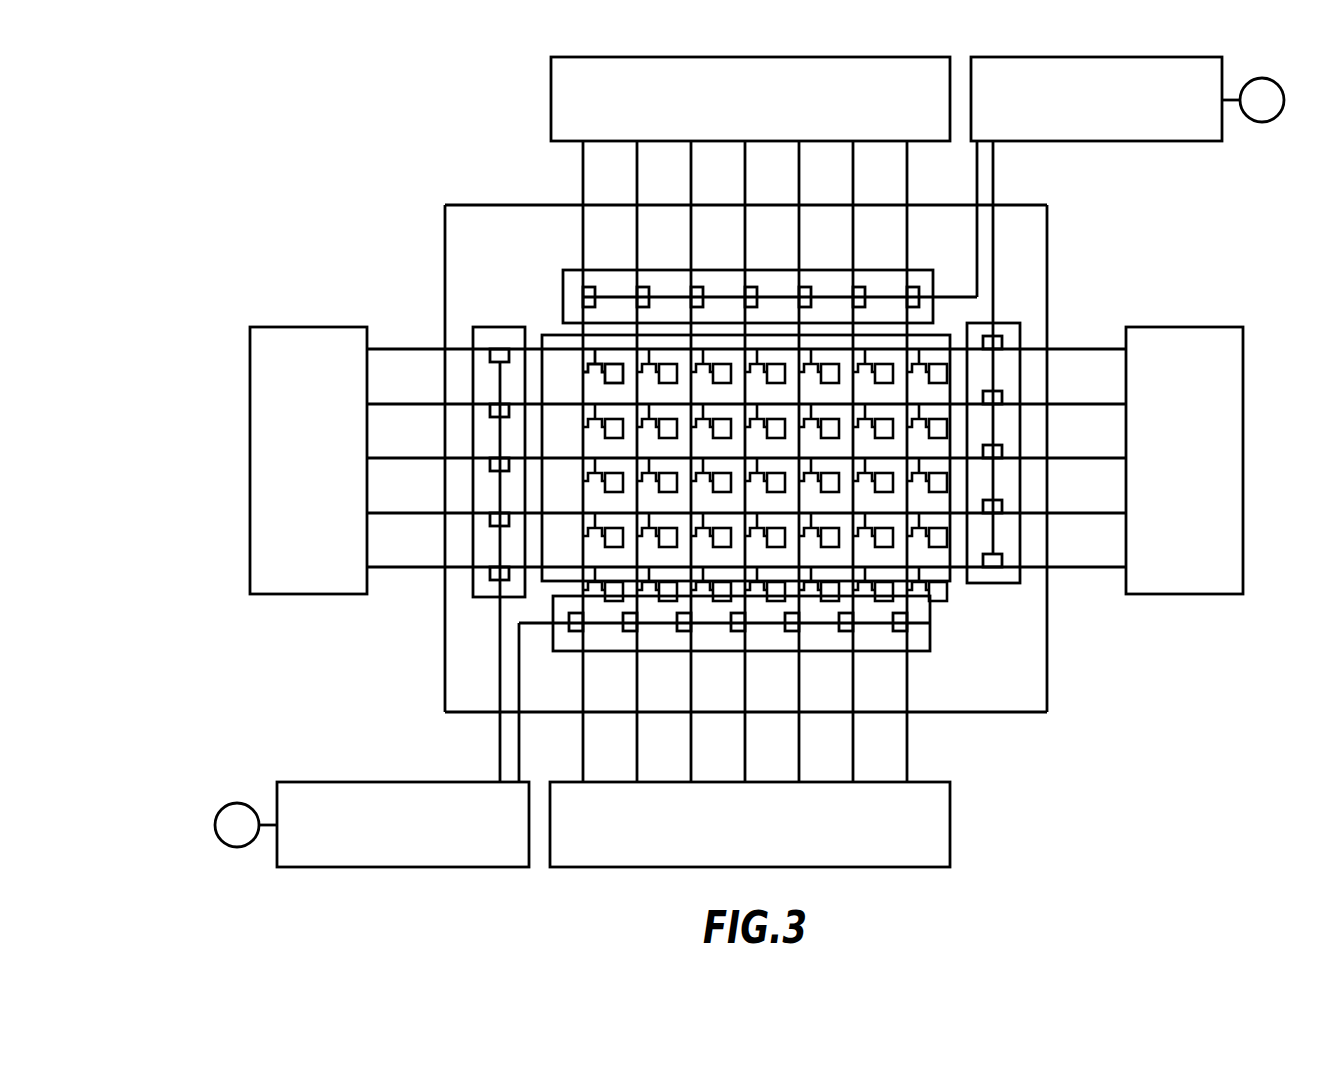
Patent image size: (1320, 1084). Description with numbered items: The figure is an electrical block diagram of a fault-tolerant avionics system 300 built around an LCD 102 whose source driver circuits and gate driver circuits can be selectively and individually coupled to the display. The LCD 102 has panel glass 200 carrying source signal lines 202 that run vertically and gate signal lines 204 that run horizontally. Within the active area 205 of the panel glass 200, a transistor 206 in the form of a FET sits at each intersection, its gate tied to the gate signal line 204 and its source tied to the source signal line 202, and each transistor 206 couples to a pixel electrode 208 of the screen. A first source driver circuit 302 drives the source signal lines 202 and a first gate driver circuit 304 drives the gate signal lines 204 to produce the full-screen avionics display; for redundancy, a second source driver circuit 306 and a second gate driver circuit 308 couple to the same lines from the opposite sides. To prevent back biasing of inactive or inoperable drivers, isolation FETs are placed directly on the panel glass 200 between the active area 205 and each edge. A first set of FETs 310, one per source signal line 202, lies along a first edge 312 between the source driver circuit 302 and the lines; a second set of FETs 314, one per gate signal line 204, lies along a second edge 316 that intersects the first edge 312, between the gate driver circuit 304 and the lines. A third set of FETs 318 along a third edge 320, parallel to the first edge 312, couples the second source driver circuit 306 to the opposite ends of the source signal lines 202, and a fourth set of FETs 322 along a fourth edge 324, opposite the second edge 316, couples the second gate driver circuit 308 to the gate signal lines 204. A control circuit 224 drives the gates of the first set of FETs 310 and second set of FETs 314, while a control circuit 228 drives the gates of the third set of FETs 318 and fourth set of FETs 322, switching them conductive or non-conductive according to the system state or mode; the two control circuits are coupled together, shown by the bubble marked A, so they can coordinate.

The avionics system 300 is at (215, 125).
The LCD 102 is at (443, 213).
The panel glass 200 is at (510, 248).
The source signal lines 202 is at (562, 177).
The gate signal lines 204 is at (418, 320).
The active area 205 is at (543, 590).
The transistor 206 is at (588, 357).
The pixel electrode 208 is at (612, 384).
The control circuit 224 is at (1072, 128).
The control circuit 228 is at (380, 853).
The first source driver circuit 302 is at (726, 128).
The first gate driver circuit 304 is at (1160, 515).
The second source driver circuit 306 is at (726, 853).
The second gate driver circuit 308 is at (284, 515).
The first set of FETs 310 is at (925, 270).
The first edge 312 is at (463, 203).
The second set of FETs 314 is at (972, 582).
The second edge 316 is at (1047, 224).
The third set of FETs 318 is at (932, 623).
The third edge 320 is at (1033, 713).
The fourth set of FETs 322 is at (470, 583).
The fourth edge 324 is at (445, 687).